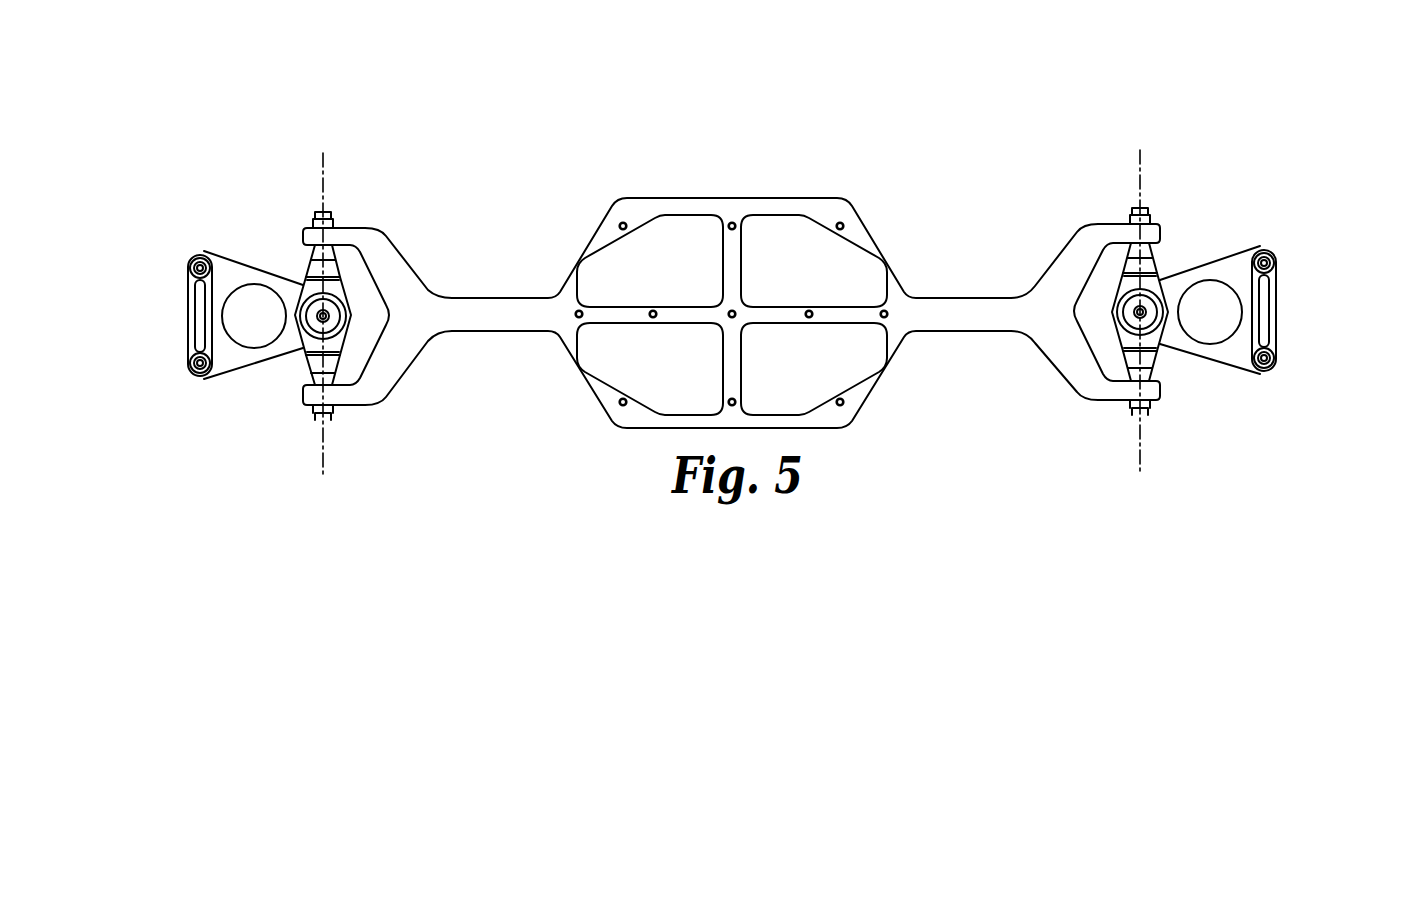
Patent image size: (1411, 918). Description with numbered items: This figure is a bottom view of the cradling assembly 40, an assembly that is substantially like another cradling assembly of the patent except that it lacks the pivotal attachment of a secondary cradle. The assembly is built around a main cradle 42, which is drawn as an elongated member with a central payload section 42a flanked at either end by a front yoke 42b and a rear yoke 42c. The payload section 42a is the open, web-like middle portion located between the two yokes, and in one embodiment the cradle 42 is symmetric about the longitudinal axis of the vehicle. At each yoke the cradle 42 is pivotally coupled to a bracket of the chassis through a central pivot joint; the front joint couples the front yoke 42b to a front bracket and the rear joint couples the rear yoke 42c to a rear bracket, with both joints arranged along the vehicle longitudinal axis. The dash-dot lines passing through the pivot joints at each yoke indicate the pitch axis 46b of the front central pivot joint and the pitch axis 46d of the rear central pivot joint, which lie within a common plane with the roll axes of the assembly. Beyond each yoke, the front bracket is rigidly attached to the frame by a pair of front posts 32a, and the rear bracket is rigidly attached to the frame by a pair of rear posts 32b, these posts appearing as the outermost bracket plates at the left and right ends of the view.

The cradling assembly 40 is at (899, 143).
The main cradle 42 is at (878, 375).
The payload section 42a is at (730, 248).
The front yoke 42b is at (407, 340).
The rear yoke 42c is at (1043, 330).
The pitch axis 46b is at (327, 463).
The pitch axis 46d is at (1142, 458).
The front posts 32a is at (187, 268).
The rear posts 32b is at (1280, 260).